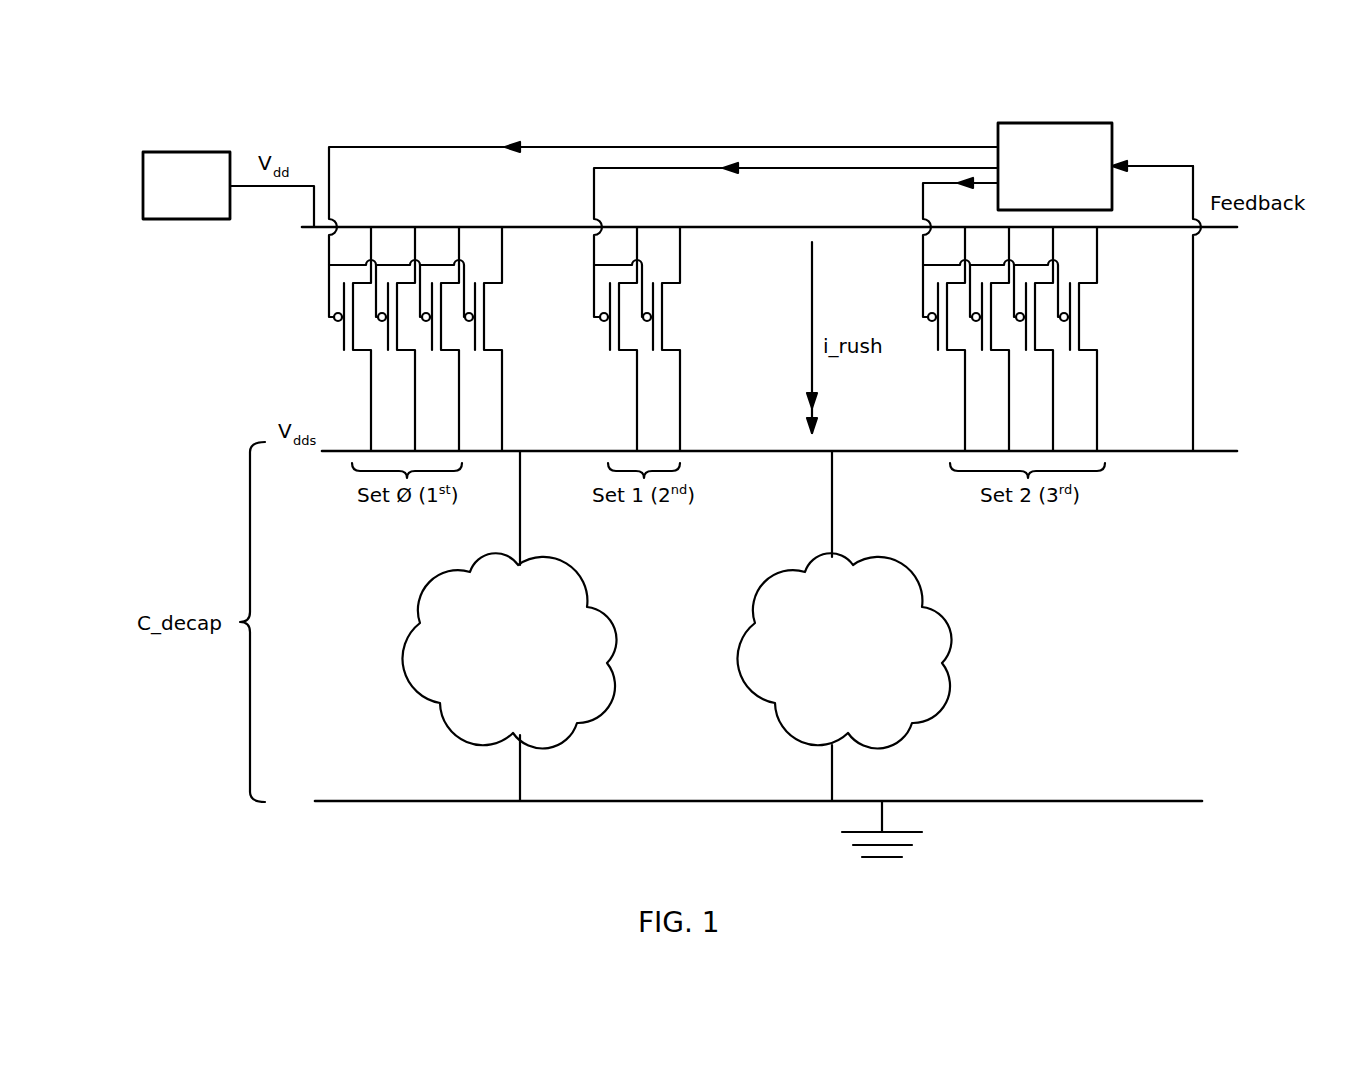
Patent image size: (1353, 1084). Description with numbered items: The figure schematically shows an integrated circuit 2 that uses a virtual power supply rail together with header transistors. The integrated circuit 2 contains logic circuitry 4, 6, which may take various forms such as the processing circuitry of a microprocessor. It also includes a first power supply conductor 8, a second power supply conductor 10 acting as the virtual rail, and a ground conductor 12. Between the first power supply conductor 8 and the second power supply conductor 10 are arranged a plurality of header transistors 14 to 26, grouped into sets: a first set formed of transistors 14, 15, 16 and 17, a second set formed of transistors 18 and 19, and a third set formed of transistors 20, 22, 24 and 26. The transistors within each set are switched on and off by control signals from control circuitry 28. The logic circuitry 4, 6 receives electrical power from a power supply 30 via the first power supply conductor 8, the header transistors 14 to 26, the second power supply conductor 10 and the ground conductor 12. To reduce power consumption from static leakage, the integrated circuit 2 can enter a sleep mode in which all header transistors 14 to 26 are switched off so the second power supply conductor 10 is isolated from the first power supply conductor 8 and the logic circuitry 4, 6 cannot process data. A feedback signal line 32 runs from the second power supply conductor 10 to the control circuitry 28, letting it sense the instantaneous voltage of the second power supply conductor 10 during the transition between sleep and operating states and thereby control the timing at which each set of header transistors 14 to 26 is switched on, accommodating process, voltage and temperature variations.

The integrated circuit 2 is at (1208, 830).
The logic circuitry 4 is at (927, 588).
The logic circuitry 6 is at (592, 588).
The first power supply conductor 8 is at (1216, 231).
The second power supply conductor 10 is at (1217, 450).
The ground conductor 12 is at (1151, 800).
The header transistor 14 is at (360, 352).
The header transistor 15 is at (404, 352).
The header transistor 16 is at (448, 352).
The header transistor 17 is at (491, 352).
The header transistor 18 is at (626, 352).
The header transistor 19 is at (669, 352).
The header transistor 20 is at (954, 352).
The header transistor 22 is at (998, 352).
The header transistor 24 is at (1042, 352).
The header transistor 26 is at (1086, 352).
The control circuitry 28 is at (1112, 142).
The power supply 30 is at (187, 221).
The feedback signal line 32 is at (1195, 346).